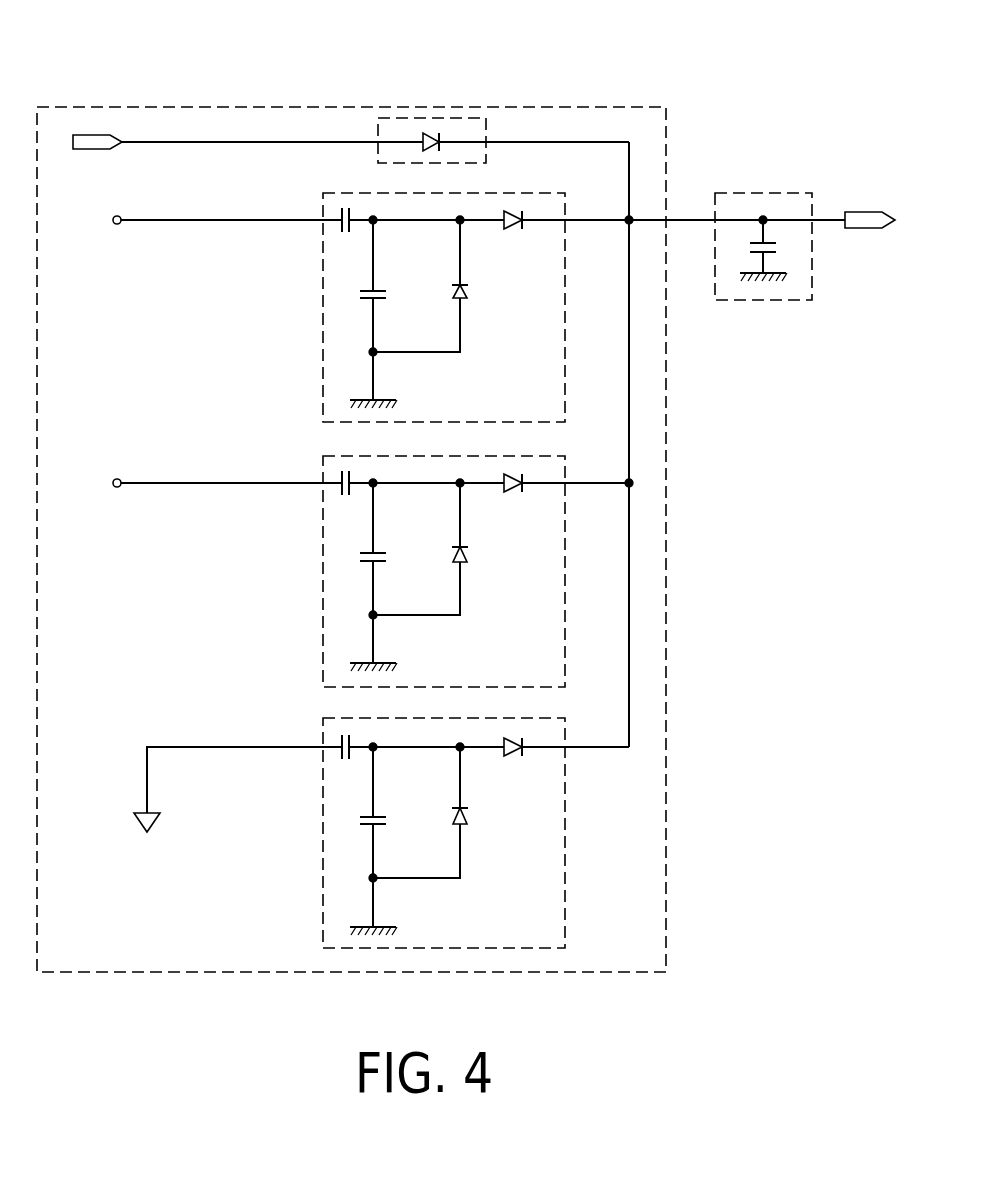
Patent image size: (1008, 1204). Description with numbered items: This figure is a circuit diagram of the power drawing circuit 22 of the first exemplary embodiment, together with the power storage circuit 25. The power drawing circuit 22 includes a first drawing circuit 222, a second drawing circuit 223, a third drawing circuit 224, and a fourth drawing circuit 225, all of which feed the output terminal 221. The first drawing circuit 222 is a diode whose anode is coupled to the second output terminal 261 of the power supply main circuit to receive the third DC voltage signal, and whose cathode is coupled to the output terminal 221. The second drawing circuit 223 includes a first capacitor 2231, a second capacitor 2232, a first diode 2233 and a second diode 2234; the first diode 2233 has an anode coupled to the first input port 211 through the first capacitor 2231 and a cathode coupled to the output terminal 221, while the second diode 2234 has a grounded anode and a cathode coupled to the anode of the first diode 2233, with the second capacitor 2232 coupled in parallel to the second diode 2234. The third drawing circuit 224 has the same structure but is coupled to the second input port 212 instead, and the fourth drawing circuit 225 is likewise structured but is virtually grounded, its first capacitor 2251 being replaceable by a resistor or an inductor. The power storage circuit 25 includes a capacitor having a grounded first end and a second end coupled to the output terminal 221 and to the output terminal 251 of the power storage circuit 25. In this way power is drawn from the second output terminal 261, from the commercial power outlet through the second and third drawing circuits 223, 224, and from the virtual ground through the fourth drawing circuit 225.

The power drawing circuit 22 is at (215, 107).
The output terminal 221 is at (693, 220).
The first drawing circuit 222 is at (398, 118).
The second drawing circuit 223 is at (482, 307).
The first capacitor 2231 is at (345, 232).
The second capacitor 2232 is at (362, 296).
The first diode 2233 is at (508, 230).
The second diode 2234 is at (466, 300).
The third drawing circuit 224 is at (323, 602).
The fourth drawing circuit 225 is at (381, 833).
The first capacitor 2251 is at (345, 759).
The power storage circuit 25 is at (777, 193).
The output terminal 251 is at (858, 212).
The second output terminal 261 is at (90, 135).
The first input port 211 is at (148, 222).
The second input port 212 is at (147, 485).